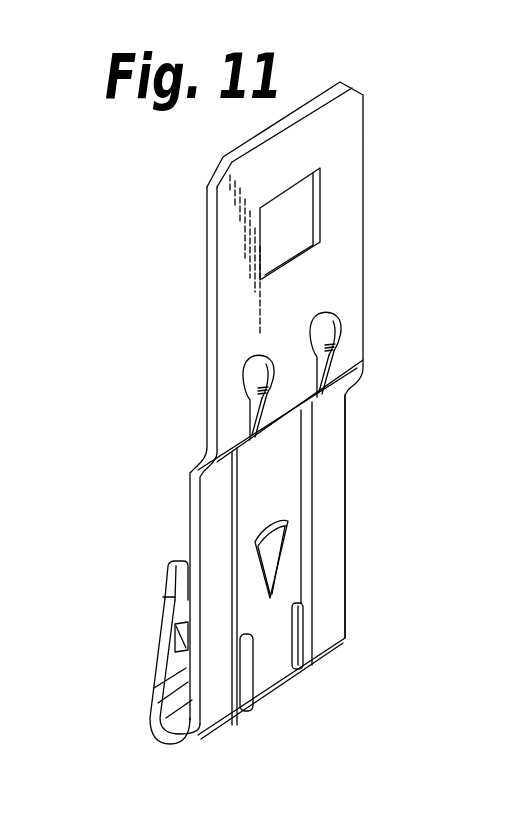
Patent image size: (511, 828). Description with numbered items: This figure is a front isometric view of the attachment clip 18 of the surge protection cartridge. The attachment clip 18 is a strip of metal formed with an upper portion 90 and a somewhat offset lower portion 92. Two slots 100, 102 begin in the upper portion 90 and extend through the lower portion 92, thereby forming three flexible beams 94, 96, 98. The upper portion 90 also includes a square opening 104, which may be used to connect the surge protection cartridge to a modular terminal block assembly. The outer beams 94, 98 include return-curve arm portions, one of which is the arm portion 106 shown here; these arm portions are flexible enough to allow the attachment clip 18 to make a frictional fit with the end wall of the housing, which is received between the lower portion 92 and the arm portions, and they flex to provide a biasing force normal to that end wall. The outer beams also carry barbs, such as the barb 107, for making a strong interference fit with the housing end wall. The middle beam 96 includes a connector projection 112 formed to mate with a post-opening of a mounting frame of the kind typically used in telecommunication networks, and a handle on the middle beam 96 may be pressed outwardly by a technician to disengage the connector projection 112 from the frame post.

The attachment clip 18 is at (392, 184).
The upper portion 90 is at (224, 304).
The lower portion 92 is at (208, 526).
The flexible beam 94 is at (213, 707).
The middle beam 96 is at (254, 606).
The flexible beam 98 is at (325, 630).
The slot 100 is at (241, 477).
The slot 102 is at (308, 528).
The square opening 104 is at (298, 228).
The return-curve arm portion 106 is at (163, 658).
The barb 107 is at (176, 648).
The connector projection 112 is at (278, 562).